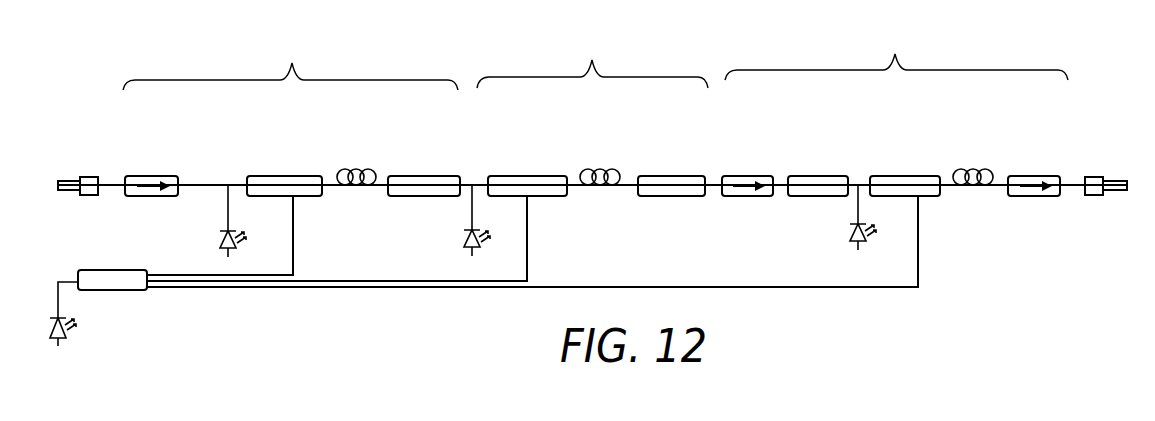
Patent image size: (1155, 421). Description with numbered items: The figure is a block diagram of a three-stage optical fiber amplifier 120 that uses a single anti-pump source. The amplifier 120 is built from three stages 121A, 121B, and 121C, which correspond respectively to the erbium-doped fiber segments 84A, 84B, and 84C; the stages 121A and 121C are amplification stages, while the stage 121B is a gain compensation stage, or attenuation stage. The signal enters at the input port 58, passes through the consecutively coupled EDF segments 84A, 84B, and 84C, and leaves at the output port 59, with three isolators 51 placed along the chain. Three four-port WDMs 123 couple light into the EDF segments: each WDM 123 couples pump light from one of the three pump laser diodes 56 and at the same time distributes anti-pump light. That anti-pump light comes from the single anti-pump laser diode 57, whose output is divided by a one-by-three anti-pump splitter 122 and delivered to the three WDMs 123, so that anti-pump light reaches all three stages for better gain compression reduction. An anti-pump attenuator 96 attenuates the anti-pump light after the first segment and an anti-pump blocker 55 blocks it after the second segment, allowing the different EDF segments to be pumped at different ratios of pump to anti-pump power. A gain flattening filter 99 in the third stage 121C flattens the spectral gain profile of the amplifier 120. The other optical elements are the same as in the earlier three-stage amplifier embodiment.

The three-stage optical fiber amplifier 120 is at (918, 359).
The input port 58 is at (73, 173).
The output port 59 is at (1108, 175).
The isolator 51 is at (158, 175).
The four-port WDM 123 is at (278, 175).
The EDF segment 84A is at (350, 199).
The EDF segment 84B is at (599, 199).
The EDF segment 84C is at (975, 199).
The attenuator 96 is at (435, 175).
The blocker 55 is at (684, 175).
The gain flattening filter 99 is at (821, 175).
The pump laser diode 56 is at (219, 248).
The 1×3 anti-pump splitter 122 is at (130, 292).
The anti-pump laser diode 57 is at (62, 344).
The stage 121A is at (290, 67).
The stage 121B is at (592, 64).
The stage 121C is at (896, 57).